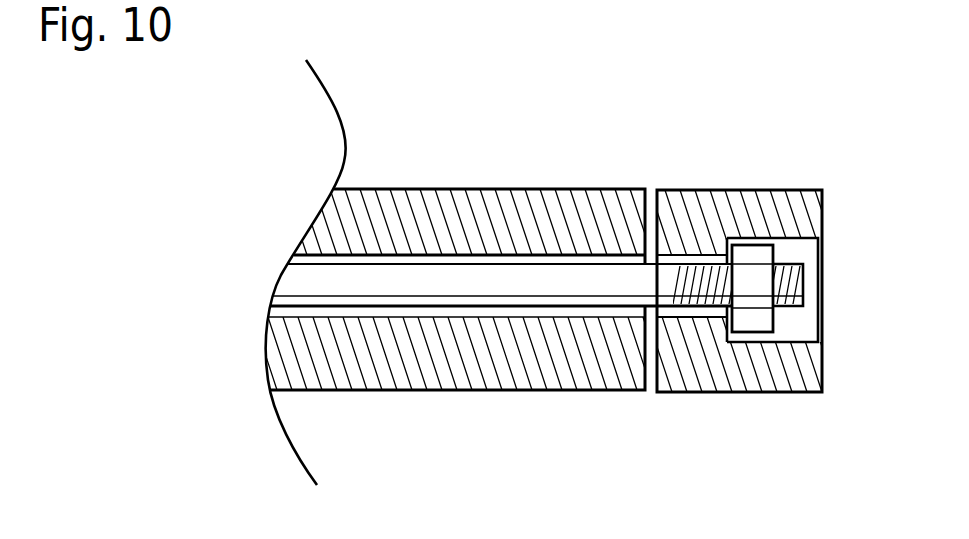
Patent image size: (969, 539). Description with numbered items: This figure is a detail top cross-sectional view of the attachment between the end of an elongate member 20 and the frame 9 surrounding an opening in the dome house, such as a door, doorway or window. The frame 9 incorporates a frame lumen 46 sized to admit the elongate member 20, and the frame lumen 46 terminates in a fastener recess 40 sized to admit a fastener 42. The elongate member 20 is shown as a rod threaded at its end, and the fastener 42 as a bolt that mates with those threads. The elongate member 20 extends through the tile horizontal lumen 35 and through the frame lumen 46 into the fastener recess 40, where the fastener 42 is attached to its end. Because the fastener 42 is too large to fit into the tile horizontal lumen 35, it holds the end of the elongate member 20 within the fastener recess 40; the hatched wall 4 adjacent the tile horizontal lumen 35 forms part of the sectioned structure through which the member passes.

The tile horizontal lumen 35 is at (476, 254).
The housing wall 4 is at (557, 390).
The elongate member 20 is at (460, 308).
The frame 9 is at (725, 190).
The fastener recess 40 is at (808, 325).
The frame lumen 46 is at (698, 318).
The fastener 42 is at (755, 245).